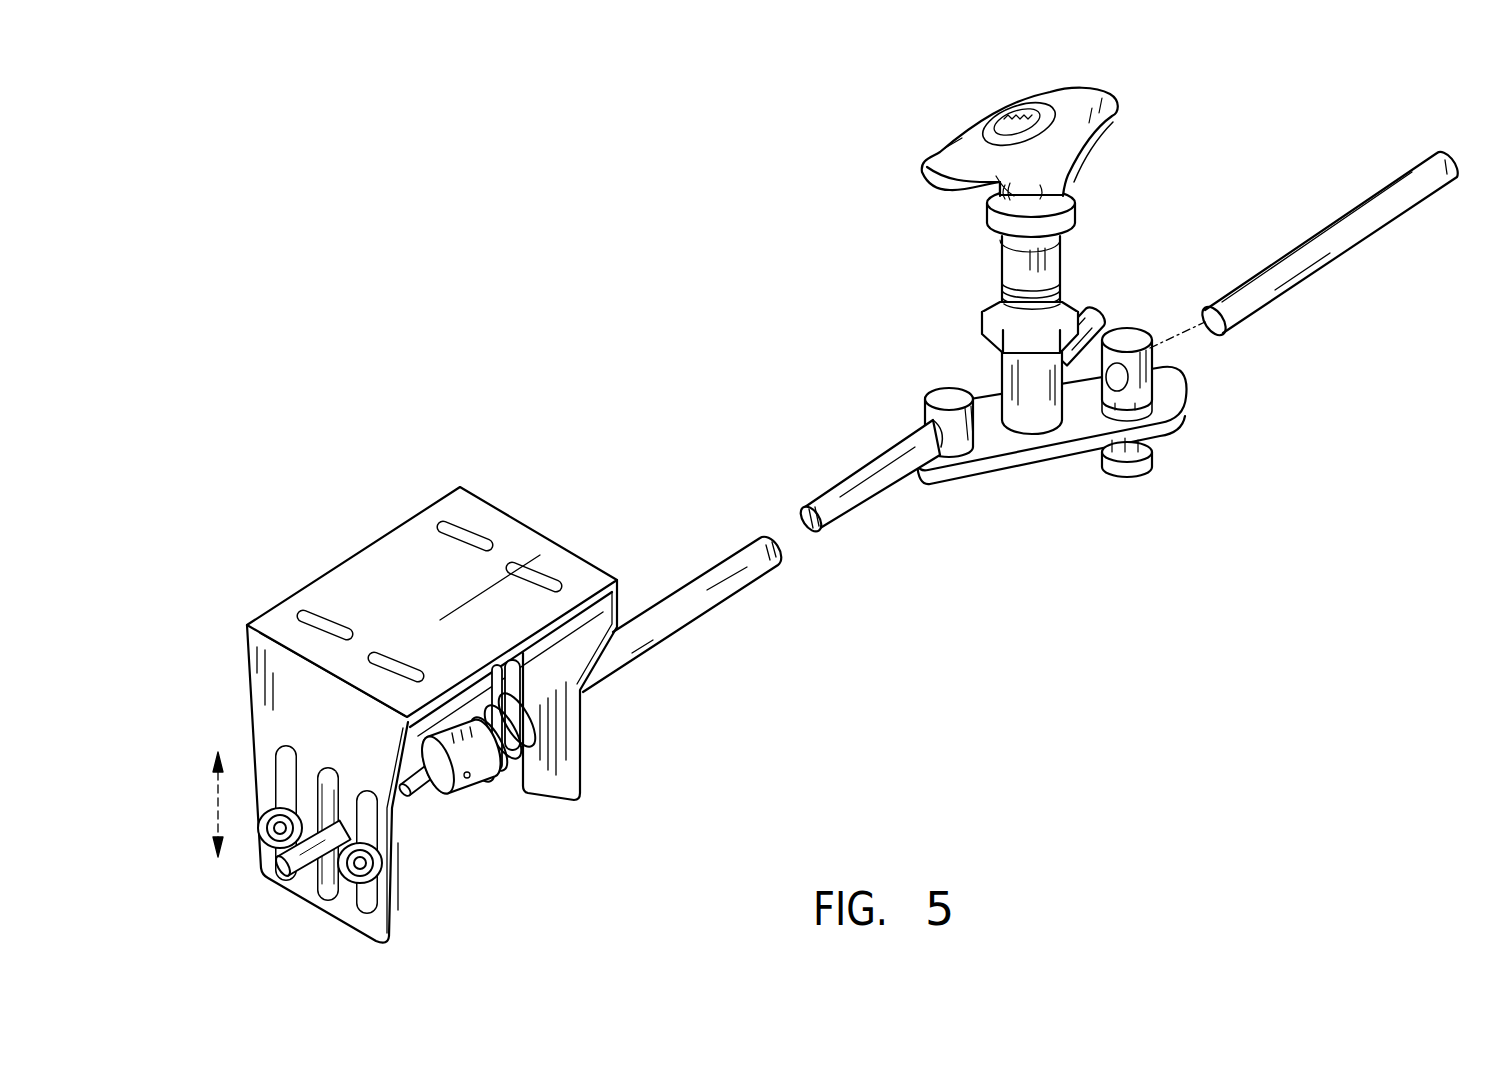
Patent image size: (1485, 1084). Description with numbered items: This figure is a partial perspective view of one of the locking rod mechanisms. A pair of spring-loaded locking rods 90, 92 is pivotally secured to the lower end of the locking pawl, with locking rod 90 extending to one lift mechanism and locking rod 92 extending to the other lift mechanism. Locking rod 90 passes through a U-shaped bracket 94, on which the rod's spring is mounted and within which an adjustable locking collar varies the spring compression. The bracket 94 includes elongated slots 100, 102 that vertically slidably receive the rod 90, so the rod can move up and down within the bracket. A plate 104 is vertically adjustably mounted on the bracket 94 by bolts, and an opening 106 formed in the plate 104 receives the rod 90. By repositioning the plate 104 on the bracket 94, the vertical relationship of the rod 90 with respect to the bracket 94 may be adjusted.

The locking rod 90 is at (673, 625).
The locking rod 92 is at (1345, 228).
The U-shaped bracket 94 is at (427, 670).
The elongated slot 100 is at (512, 673).
The elongated slot 102 is at (330, 780).
The plate 104 is at (405, 875).
The opening 106 is at (297, 797).